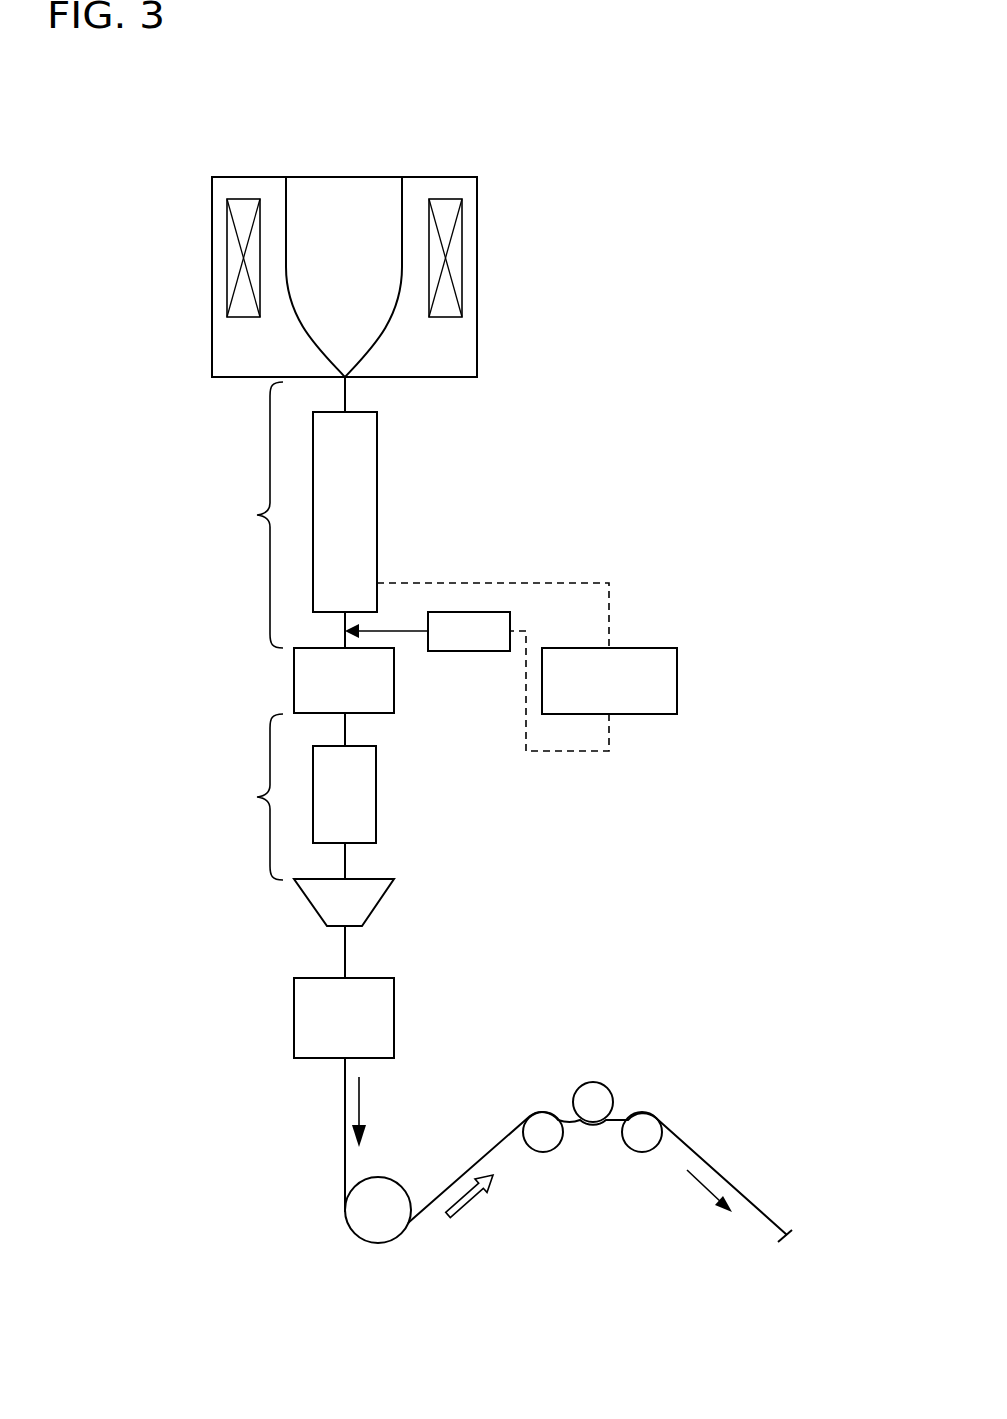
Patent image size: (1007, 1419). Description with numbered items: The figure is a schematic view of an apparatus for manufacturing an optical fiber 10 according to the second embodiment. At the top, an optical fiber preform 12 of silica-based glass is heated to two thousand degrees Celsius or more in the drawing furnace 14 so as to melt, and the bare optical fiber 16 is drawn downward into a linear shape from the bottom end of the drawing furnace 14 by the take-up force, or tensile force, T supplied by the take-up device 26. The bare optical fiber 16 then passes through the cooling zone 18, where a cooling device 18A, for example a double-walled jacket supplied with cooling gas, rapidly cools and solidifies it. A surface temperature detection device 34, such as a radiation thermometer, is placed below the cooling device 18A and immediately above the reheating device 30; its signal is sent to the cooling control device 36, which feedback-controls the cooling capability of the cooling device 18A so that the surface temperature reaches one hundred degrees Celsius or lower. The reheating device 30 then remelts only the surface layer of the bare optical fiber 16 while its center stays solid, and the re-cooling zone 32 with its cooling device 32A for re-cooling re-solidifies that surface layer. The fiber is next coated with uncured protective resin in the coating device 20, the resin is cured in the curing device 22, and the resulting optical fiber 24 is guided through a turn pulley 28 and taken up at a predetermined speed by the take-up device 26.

The apparatus for manufacturing an optical fiber 10 is at (560, 280).
The optical fiber preform 12 is at (343, 200).
The drawing furnace 14 is at (440, 177).
The bare optical fiber 16 is at (346, 395).
The cooling zone 18 is at (255, 515).
The cooling device 18A is at (359, 498).
The coating device 20 is at (318, 905).
The curing device 22 is at (308, 1018).
The optical fiber 24 is at (345, 1117).
The take-up device 26 is at (590, 1165).
The turn pulley 28 is at (371, 1225).
The reheating device 30 is at (305, 679).
The re-cooling zone 32 is at (254, 797).
The cooling device for re-cooling 32A is at (355, 793).
The surface temperature detection device 34 is at (469, 638).
The cooling control device 36 is at (655, 678).
The take-up force (tensile force) T is at (467, 1202).